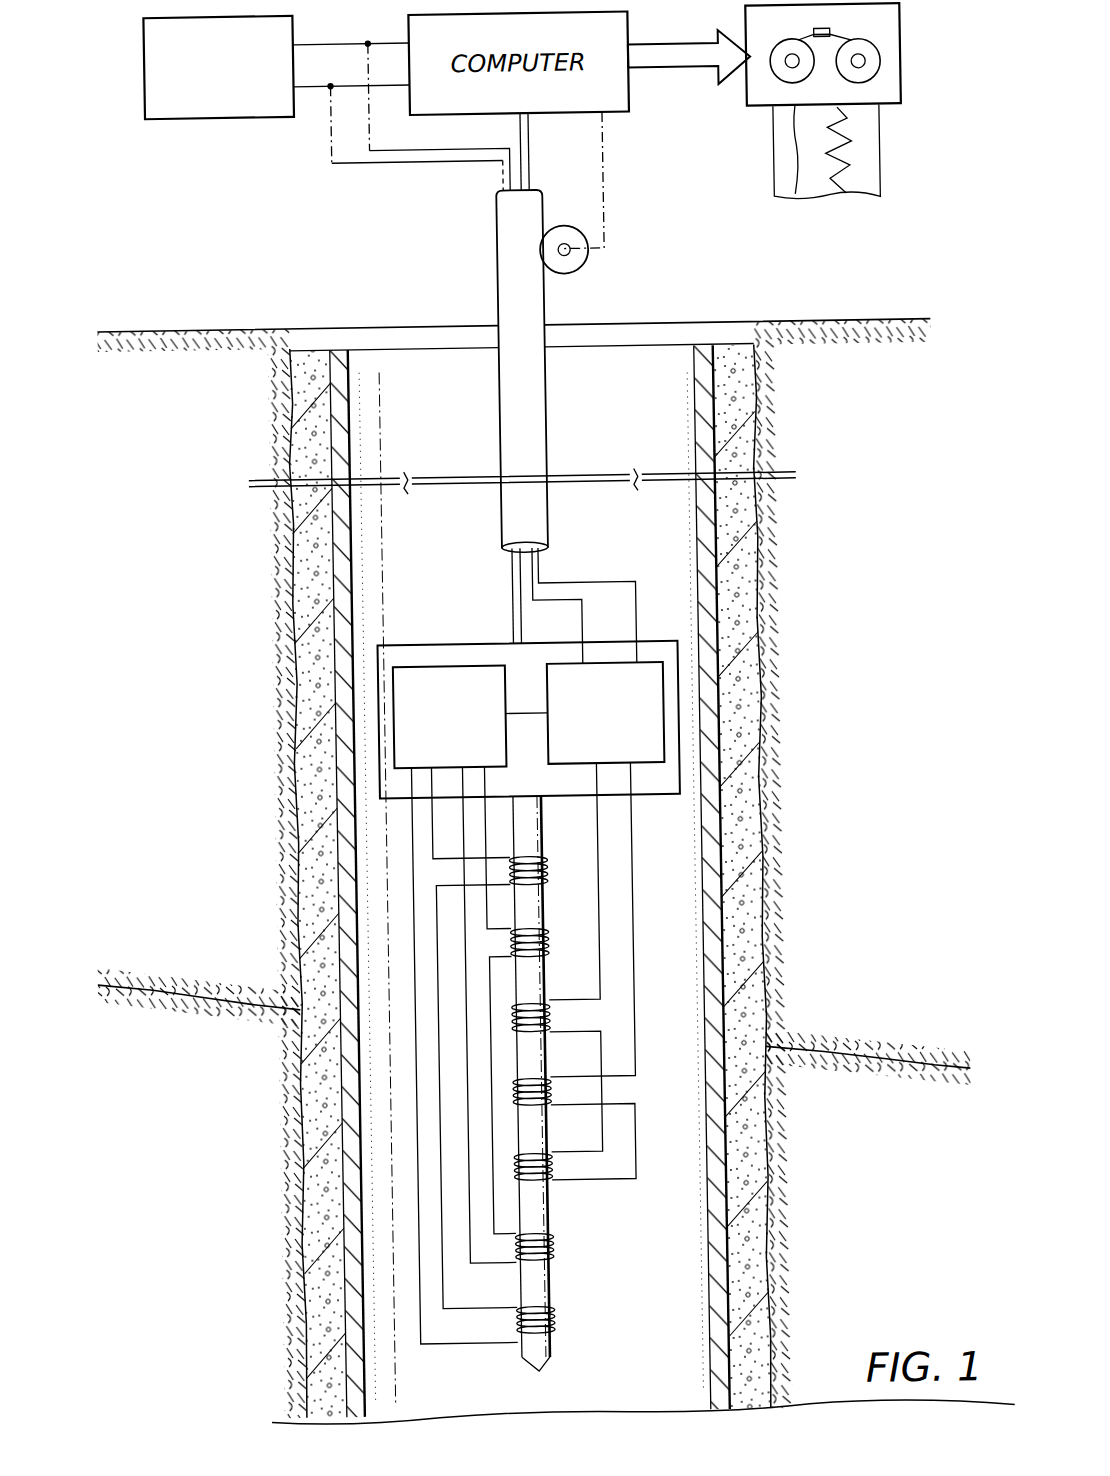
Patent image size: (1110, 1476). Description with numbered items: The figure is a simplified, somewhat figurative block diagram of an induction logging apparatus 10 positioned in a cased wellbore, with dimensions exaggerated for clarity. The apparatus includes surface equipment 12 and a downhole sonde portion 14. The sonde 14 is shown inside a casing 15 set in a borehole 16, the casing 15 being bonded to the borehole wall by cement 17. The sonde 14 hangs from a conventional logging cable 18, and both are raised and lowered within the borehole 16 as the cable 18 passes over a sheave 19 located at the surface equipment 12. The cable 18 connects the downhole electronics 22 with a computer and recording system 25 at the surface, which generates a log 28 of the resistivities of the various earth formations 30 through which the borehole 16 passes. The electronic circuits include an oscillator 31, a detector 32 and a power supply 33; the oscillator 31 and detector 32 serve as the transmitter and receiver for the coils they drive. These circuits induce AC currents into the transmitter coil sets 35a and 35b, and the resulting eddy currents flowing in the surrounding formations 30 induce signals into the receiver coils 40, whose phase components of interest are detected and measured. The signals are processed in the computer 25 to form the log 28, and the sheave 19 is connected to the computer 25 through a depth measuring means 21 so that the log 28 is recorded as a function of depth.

The induction logging apparatus 10 is at (310, 203).
The surface equipment 12 is at (737, 118).
The downhole sonde portion 14 is at (458, 639).
The casing 15 is at (337, 422).
The borehole 16 is at (297, 342).
The cement 17 is at (304, 531).
The logging cable 18 is at (505, 258).
The sheave 19 is at (592, 270).
The depth measuring means 21 is at (613, 230).
The downhole electronics 22 is at (395, 766).
The computer and recording system 25 is at (912, 50).
The log 28 is at (891, 162).
The earth formations 30 is at (836, 766).
The oscillator 31 is at (395, 701).
The detector 32 is at (665, 740).
The power supply 33 is at (233, 116).
The transmitter coil set 35a is at (546, 945).
The transmitter coil set 35b is at (547, 868).
The receiver coils 40 is at (508, 1165).